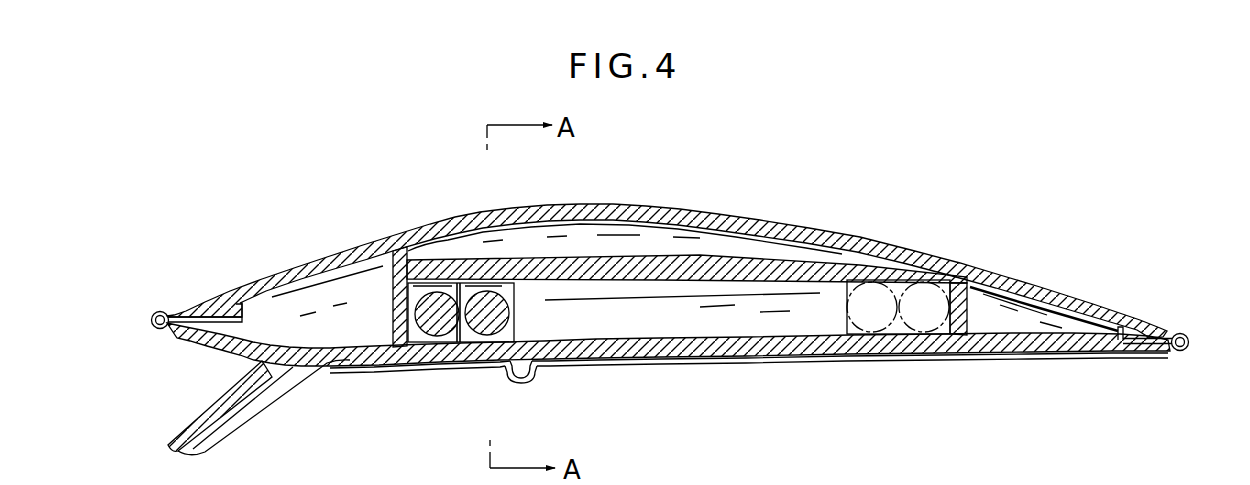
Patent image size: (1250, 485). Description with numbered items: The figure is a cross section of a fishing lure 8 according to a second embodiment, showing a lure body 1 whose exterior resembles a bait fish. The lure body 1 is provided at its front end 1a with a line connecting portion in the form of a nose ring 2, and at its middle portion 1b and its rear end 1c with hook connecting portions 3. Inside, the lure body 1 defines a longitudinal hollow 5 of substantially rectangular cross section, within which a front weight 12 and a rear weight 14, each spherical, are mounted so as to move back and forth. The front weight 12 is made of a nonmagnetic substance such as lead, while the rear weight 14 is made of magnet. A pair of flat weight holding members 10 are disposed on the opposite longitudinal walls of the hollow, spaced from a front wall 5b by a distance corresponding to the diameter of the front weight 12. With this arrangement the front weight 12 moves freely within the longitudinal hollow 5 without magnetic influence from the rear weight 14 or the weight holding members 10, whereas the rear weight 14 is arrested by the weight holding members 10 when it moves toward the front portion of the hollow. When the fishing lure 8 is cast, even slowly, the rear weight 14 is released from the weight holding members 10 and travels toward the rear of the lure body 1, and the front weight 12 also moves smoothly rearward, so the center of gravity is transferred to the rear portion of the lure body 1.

The lure body 1 is at (862, 237).
The front end 1a is at (186, 306).
The middle portion 1b is at (595, 369).
The rear end 1c is at (1180, 332).
The nose ring 2 is at (156, 330).
The hook connecting portions 3 is at (1190, 344).
The longitudinal hollow 5 is at (741, 293).
The front wall 5b is at (401, 350).
The fishing lure 8 is at (1010, 216).
The weight holding members 10 is at (476, 346).
The front weight 12 is at (432, 301).
The rear weight 14 is at (504, 306).